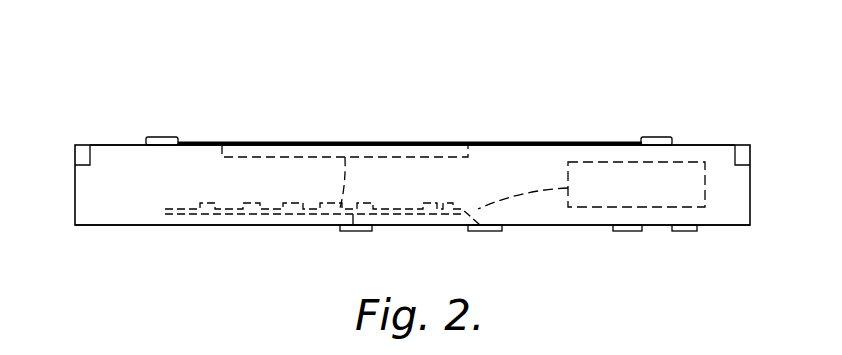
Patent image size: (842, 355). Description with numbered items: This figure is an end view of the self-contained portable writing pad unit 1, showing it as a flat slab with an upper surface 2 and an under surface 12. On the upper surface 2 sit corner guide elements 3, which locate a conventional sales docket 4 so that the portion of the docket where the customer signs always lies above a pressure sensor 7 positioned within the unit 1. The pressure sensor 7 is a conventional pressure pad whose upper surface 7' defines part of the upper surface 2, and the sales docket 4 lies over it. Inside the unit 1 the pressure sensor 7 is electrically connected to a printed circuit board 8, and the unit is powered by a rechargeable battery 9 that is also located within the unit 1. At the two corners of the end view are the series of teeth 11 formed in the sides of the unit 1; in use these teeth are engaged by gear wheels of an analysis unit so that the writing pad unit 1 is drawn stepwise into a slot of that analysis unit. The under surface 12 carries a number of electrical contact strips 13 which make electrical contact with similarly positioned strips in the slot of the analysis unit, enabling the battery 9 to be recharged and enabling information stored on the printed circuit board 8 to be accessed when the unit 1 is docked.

The writing pad unit 1 is at (735, 190).
The upper surface 2 is at (708, 145).
The corner guide elements 3 is at (163, 137).
The sales docket 4 is at (540, 143).
The pressure sensor 7 is at (357, 176).
The upper surface of the sensor 7' is at (345, 120).
The printed circuit board 8 is at (220, 214).
The rechargeable battery 9 is at (591, 185).
The teeth 11 is at (82, 152).
The under surface 12 is at (735, 228).
The electrical contact strips 13 is at (468, 231).